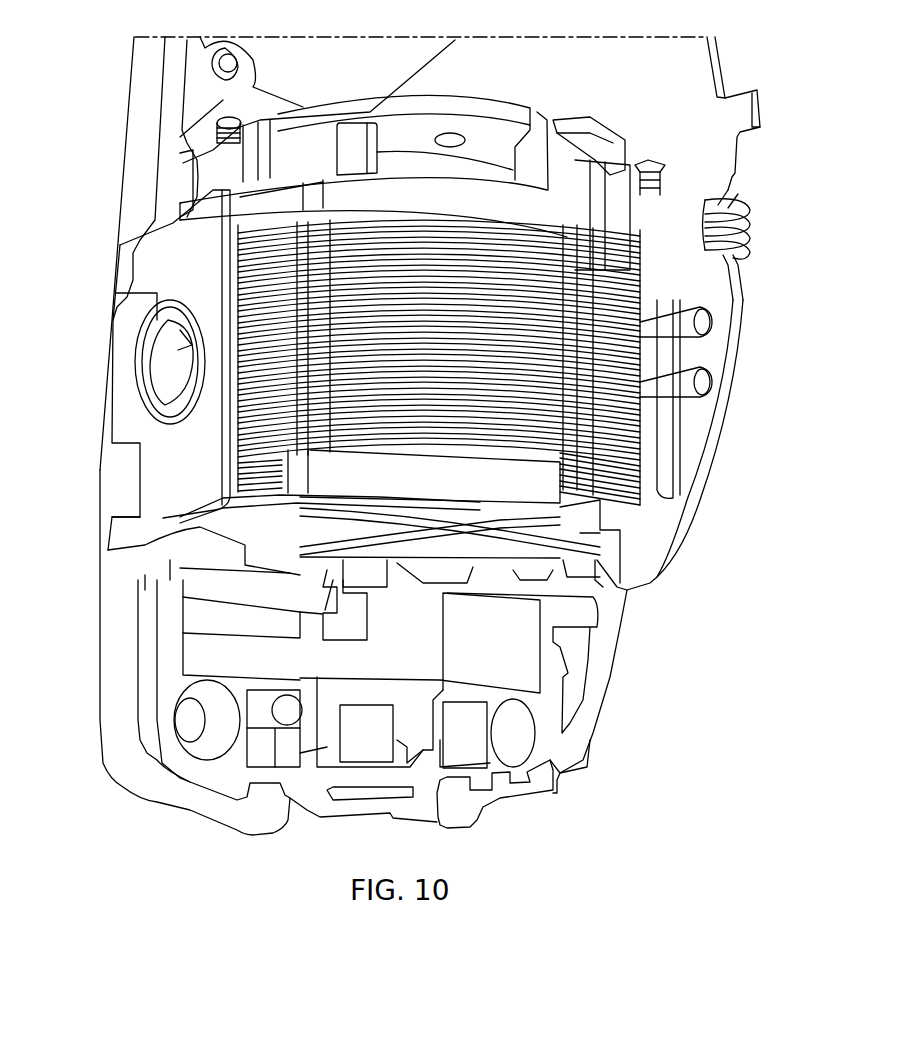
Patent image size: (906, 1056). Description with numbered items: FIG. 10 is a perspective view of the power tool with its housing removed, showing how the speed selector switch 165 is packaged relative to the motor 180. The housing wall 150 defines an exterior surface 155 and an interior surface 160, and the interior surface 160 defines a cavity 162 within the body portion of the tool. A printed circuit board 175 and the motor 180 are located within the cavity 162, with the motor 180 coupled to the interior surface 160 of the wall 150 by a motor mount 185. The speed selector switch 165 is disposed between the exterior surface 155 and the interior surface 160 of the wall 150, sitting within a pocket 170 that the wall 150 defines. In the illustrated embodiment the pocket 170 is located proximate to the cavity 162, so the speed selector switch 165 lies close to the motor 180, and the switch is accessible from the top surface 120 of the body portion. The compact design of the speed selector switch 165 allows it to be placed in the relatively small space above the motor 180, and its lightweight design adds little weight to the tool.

The top surface 120 is at (97, 353).
The wall 150 is at (165, 203).
The exterior surface 155 is at (135, 183).
The interior surface 160 is at (190, 177).
The cavity 162 is at (190, 620).
The speed selector switch 165 is at (147, 435).
The pocket 170 is at (167, 525).
The printed circuit board 175 is at (687, 457).
The motor 180 is at (247, 263).
The motor mount 185 is at (337, 187).